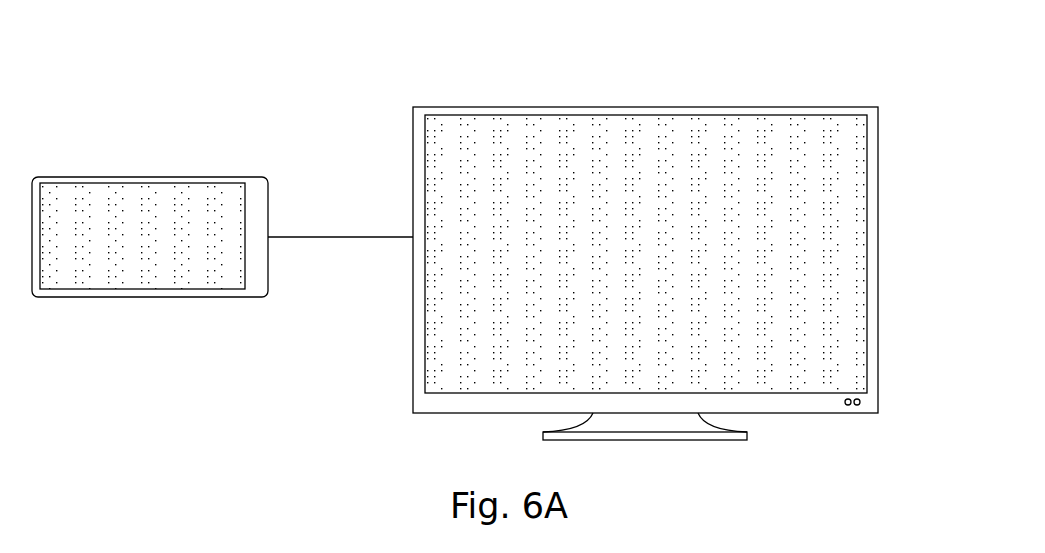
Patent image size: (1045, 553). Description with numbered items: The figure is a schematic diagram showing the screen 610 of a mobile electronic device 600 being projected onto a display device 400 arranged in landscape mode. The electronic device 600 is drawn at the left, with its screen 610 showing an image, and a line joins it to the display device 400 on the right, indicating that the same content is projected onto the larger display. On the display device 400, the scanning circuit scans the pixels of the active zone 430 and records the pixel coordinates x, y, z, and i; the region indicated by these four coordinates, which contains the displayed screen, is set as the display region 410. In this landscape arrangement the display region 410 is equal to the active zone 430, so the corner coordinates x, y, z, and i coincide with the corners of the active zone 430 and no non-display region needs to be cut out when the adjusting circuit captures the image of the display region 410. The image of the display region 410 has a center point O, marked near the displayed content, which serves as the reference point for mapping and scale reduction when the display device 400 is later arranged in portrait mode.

The display device 400 is at (648, 241).
The display region 410 is at (488, 117).
The active zone 430 is at (492, 393).
The electronic device 600 is at (150, 205).
The screen 610 is at (180, 197).
The center point O is at (650, 245).
The pixel coordinate x is at (426, 109).
The pixel coordinate y is at (867, 109).
The pixel coordinate i is at (422, 398).
The pixel coordinate z is at (870, 400).